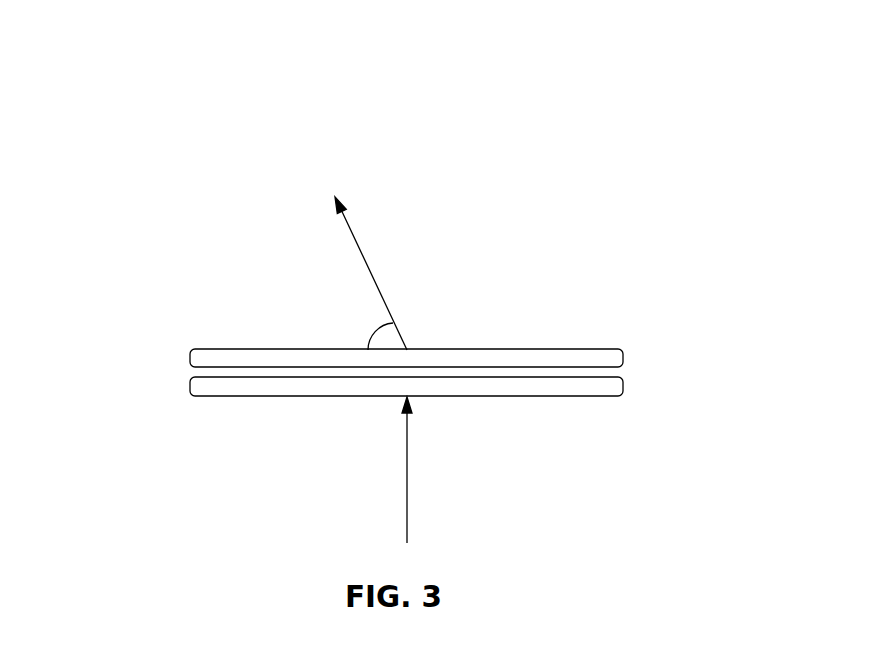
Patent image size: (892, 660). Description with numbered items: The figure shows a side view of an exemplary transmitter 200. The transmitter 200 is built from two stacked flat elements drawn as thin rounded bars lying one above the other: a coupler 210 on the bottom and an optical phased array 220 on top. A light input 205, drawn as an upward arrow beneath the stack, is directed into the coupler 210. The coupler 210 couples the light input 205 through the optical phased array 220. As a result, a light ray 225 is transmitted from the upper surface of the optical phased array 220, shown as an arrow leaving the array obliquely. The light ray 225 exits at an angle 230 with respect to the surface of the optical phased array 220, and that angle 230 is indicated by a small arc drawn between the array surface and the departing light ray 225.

The transmitter 200 is at (617, 179).
The light input 205 is at (407, 480).
The coupler 210 is at (190, 384).
The optical phased array 220 is at (623, 358).
The light ray 225 is at (372, 270).
The angle 230 is at (392, 323).